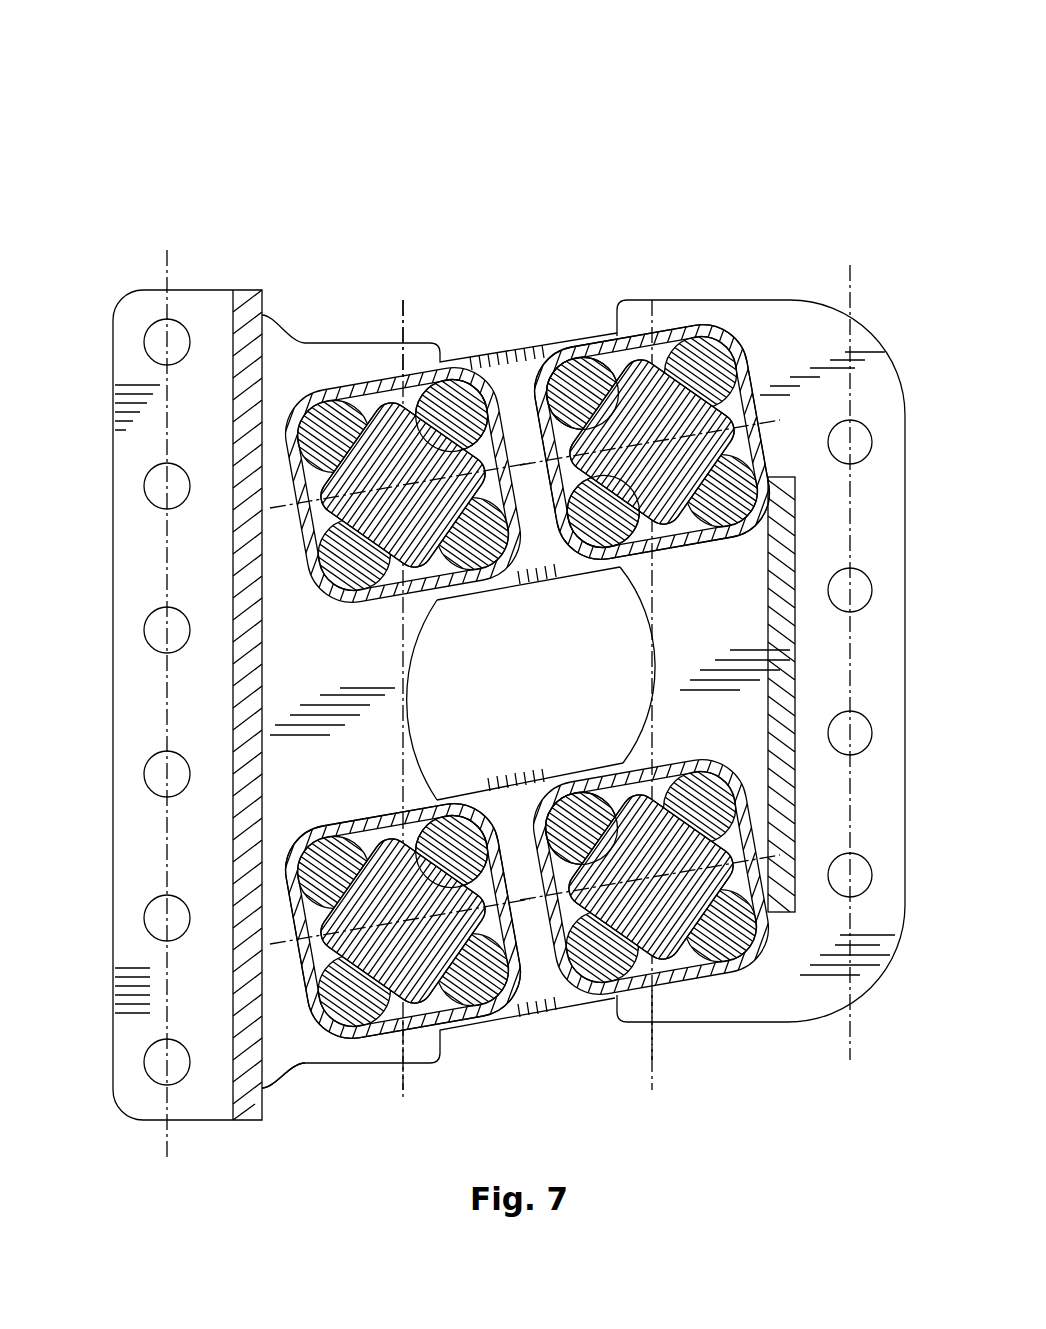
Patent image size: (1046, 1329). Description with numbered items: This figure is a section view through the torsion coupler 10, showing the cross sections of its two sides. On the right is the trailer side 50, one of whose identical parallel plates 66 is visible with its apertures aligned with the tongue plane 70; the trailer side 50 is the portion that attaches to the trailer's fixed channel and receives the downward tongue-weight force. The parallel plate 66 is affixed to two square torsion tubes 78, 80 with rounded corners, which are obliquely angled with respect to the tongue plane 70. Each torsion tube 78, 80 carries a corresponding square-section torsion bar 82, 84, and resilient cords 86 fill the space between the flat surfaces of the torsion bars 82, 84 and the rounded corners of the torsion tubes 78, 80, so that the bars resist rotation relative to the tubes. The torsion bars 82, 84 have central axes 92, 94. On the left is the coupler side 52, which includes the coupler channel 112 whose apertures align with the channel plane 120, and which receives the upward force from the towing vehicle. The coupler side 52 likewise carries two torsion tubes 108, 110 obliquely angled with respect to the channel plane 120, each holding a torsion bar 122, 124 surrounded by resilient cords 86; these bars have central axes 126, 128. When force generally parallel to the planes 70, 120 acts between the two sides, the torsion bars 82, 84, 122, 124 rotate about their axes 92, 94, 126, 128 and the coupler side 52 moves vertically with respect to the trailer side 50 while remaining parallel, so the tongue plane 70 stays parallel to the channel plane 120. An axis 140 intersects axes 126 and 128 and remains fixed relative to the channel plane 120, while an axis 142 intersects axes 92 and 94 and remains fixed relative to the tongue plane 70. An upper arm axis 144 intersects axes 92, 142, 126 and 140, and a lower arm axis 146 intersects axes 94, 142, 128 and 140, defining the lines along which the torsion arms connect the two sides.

The torsion coupler 10 is at (493, 124).
The trailer side 50 is at (721, 210).
The coupler side 52 is at (329, 244).
The parallel plate 66 is at (790, 300).
The tongue plane 70 is at (855, 270).
The torsion tube 78 is at (600, 335).
The torsion tube 80 is at (630, 1000).
The torsion bar 82 is at (625, 567).
The torsion bar 84 is at (607, 770).
The resilient cords 86 is at (540, 335).
The central axis 92 is at (665, 345).
The central axis 94 is at (730, 985).
The torsion tube 108 is at (372, 390).
The torsion tube 110 is at (385, 1030).
The coupler channel 112 is at (217, 290).
The channel plane 120 is at (165, 255).
The torsion bar 122 is at (458, 598).
The torsion bar 124 is at (460, 803).
The central axis 126 is at (420, 362).
The central axis 128 is at (478, 1035).
The axis 140 is at (395, 1035).
The axis 142 is at (690, 1000).
The upper arm axis 144 is at (536, 580).
The lower arm axis 146 is at (285, 1058).